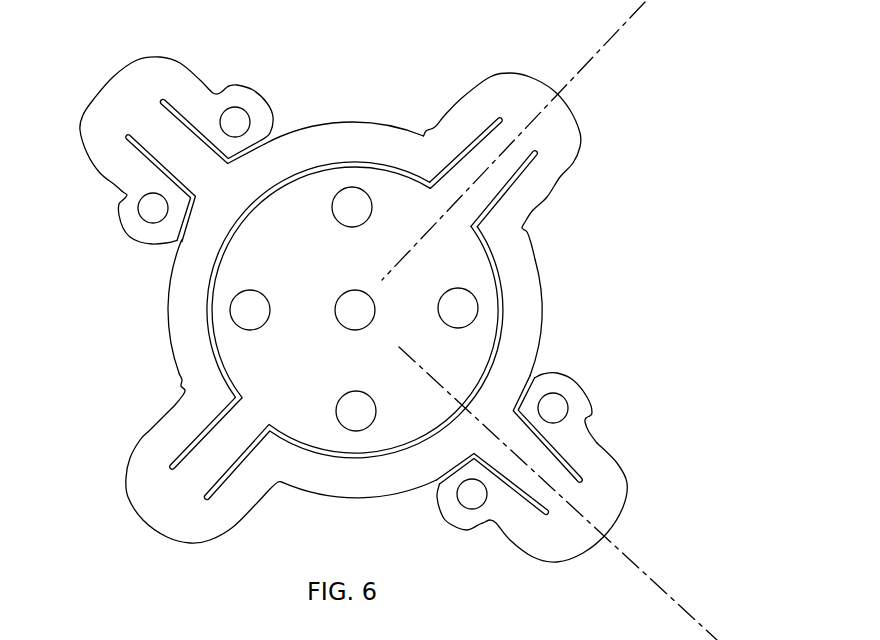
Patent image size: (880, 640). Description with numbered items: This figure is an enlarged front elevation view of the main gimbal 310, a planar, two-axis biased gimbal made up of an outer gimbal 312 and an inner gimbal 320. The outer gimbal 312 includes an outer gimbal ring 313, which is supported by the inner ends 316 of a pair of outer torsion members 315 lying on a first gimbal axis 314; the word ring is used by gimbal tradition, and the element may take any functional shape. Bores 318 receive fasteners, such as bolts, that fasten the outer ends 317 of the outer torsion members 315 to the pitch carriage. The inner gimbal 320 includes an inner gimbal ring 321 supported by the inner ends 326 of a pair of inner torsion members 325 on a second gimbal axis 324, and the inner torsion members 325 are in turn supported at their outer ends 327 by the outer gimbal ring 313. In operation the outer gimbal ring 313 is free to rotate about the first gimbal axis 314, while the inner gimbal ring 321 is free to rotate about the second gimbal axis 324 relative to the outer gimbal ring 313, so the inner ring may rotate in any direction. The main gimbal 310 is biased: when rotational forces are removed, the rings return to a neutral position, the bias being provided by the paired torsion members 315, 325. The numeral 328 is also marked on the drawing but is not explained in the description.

The main gimbal 310 is at (645, 96).
The outer gimbal 312 is at (519, 353).
The outer gimbal ring 313 is at (530, 318).
The first gimbal axis 314 is at (676, 598).
The outer torsion members 315 is at (547, 473).
The inner ends of outer torsion members 316 is at (521, 450).
The outer ends of outer torsion members 317 is at (580, 395).
The bores 318 is at (470, 502).
The inner gimbal 320 is at (467, 271).
The inner gimbal ring 321 is at (397, 197).
The second gimbal axis 324 is at (617, 33).
The inner torsion members 325 is at (500, 163).
The inner ends of inner torsion members 326 is at (467, 202).
The outer ends of inner torsion members 327 is at (498, 156).
The arcuate slot 328 is at (330, 437).